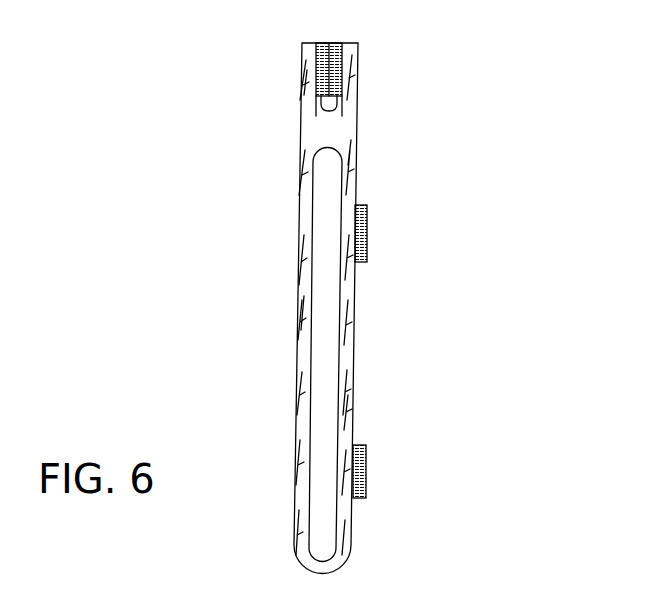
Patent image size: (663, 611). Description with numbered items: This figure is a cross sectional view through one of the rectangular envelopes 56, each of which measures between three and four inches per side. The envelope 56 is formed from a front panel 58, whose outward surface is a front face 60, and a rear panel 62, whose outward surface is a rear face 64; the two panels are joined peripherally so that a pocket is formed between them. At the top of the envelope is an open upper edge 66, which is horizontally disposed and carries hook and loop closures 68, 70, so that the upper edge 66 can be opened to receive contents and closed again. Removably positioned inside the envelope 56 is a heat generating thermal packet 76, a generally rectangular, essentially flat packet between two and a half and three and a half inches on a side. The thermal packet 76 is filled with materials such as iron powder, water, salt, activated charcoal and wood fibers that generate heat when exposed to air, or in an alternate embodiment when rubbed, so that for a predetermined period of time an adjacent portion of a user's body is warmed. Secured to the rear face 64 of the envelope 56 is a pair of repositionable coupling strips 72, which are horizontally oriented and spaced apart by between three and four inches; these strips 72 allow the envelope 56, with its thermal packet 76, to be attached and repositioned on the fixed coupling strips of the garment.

The rectangular envelope 56 is at (355, 157).
The front panel 58 is at (304, 322).
The front face 60 is at (298, 373).
The rear panel 62 is at (322, 290).
The rear face 64 is at (353, 382).
The open upper edge 66 is at (348, 43).
The hook and loop closure 68 is at (314, 117).
The hook and loop closure 70 is at (343, 117).
The repositionable coupling strips 72 is at (368, 222).
The heat generating thermal packet 76 is at (322, 147).